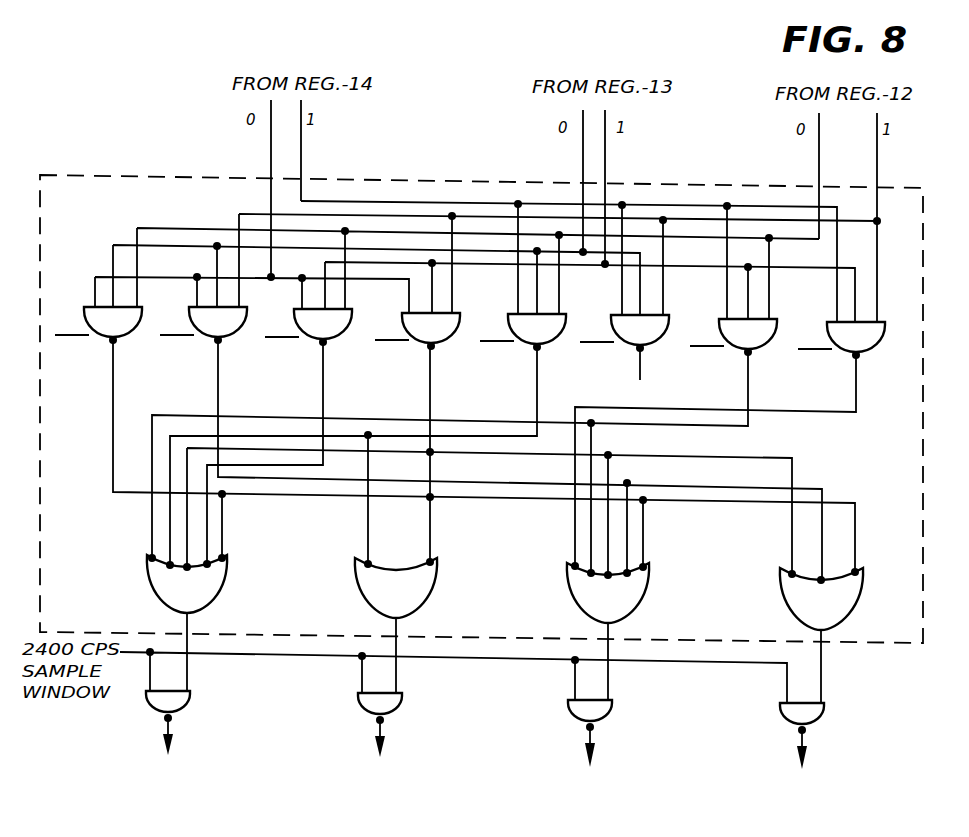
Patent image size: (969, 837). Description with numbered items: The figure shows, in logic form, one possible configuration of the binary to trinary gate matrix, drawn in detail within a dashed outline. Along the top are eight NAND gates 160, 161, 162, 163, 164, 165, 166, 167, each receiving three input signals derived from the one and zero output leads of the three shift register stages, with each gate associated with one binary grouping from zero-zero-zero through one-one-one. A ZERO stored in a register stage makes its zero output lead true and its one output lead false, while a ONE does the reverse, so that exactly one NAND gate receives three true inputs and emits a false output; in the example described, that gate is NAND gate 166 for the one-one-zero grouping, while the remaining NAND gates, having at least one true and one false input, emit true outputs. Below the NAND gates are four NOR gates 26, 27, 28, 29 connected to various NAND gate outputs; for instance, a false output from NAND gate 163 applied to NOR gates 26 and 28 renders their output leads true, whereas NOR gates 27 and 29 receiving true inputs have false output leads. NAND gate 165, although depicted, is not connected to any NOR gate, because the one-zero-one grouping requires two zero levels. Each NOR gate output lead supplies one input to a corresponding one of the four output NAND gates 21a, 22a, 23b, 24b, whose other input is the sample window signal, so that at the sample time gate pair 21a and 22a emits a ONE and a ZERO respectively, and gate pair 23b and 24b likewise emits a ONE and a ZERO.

The NAND gate 160 is at (128, 333).
The NAND gate 161 is at (233, 333).
The NAND gate 162 is at (338, 335).
The NAND gate 163 is at (446, 339).
The NAND gate 164 is at (552, 340).
The NAND gate 165 is at (655, 341).
The NAND gate 166 is at (763, 345).
The NAND gate 167 is at (871, 348).
The NOR gate 26 is at (146, 587).
The NOR gate 27 is at (354, 590).
The NOR gate 28 is at (569, 595).
The NOR gate 29 is at (782, 602).
The NAND gate 21a is at (190, 697).
The NAND gate 22a is at (402, 699).
The NAND gate 23b is at (612, 706).
The NAND gate 24b is at (824, 709).